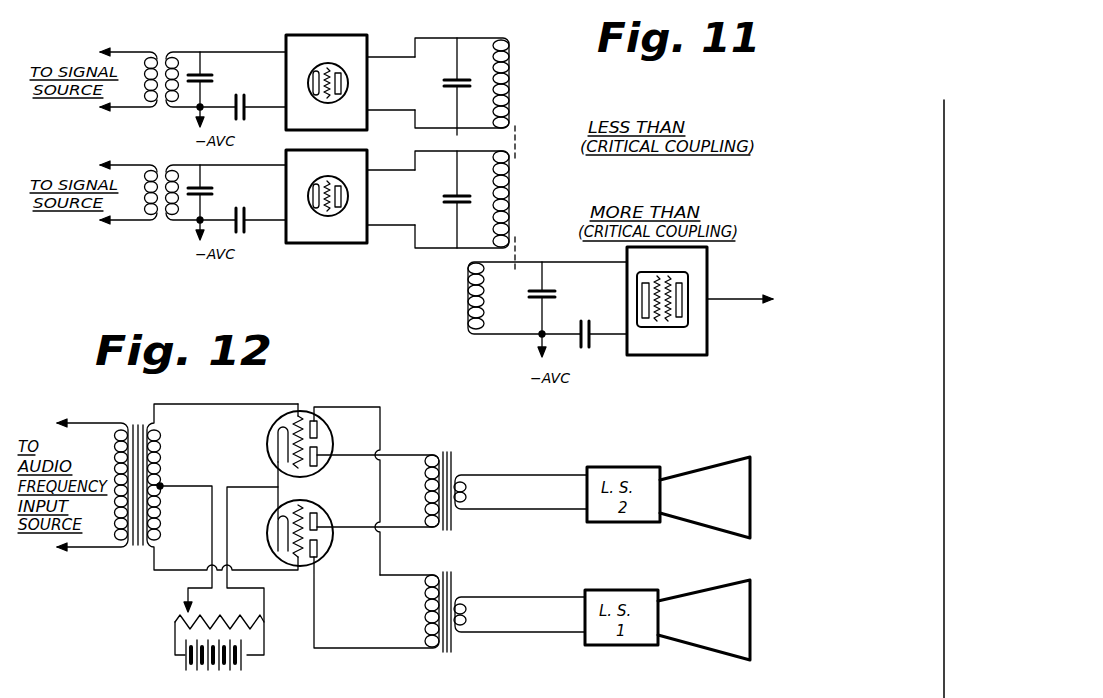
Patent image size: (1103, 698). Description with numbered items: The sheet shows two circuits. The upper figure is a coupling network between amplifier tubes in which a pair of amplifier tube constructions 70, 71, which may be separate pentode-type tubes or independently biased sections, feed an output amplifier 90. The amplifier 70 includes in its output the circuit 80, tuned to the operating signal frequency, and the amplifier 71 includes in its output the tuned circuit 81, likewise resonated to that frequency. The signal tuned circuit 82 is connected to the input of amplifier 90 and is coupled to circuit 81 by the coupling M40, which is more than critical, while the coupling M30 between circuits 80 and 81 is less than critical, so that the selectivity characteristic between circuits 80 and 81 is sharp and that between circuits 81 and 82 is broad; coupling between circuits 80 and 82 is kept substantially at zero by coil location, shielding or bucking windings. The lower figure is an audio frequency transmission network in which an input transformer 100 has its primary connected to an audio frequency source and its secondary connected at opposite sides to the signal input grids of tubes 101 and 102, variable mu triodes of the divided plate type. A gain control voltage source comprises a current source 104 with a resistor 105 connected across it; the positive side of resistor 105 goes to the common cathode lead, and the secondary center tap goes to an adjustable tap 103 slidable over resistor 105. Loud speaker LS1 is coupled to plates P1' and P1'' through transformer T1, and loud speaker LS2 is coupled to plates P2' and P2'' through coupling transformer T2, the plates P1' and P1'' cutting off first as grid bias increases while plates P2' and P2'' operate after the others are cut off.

In FIG. 11, the amplifier tube construction 70 is at (355, 36).
In FIG. 11, the amplifier tube construction 71 is at (352, 244).
In FIG. 11, the tuned circuit 80 is at (497, 40).
In FIG. 11, the tuned circuit 81 is at (492, 232).
In FIG. 11, the signal tuned circuit 82 is at (487, 323).
In FIG. 11, the output amplifier 90 is at (707, 335).
In FIG. 11, the coupling M30 is at (586, 133).
In FIG. 11, the coupling M40 is at (588, 222).
In FIG. 12, the input transformer 100 is at (137, 552).
In FIG. 12, the tube 101 is at (314, 439).
In FIG. 12, the tube 102 is at (314, 545).
In FIG. 12, the adjustable tap 103 is at (184, 609).
In FIG. 12, the current source 104 is at (188, 645).
In FIG. 12, the resistor 105 is at (246, 629).
In FIG. 12, the transformer T1 is at (449, 602).
In FIG. 12, the coupling transformer T2 is at (447, 452).
In FIG. 12, the plate P1' is at (336, 426).
In FIG. 12, the plate P2' is at (329, 471).
In FIG. 12, the plate P1'' is at (336, 556).
In FIG. 12, the plate P2'' is at (334, 512).